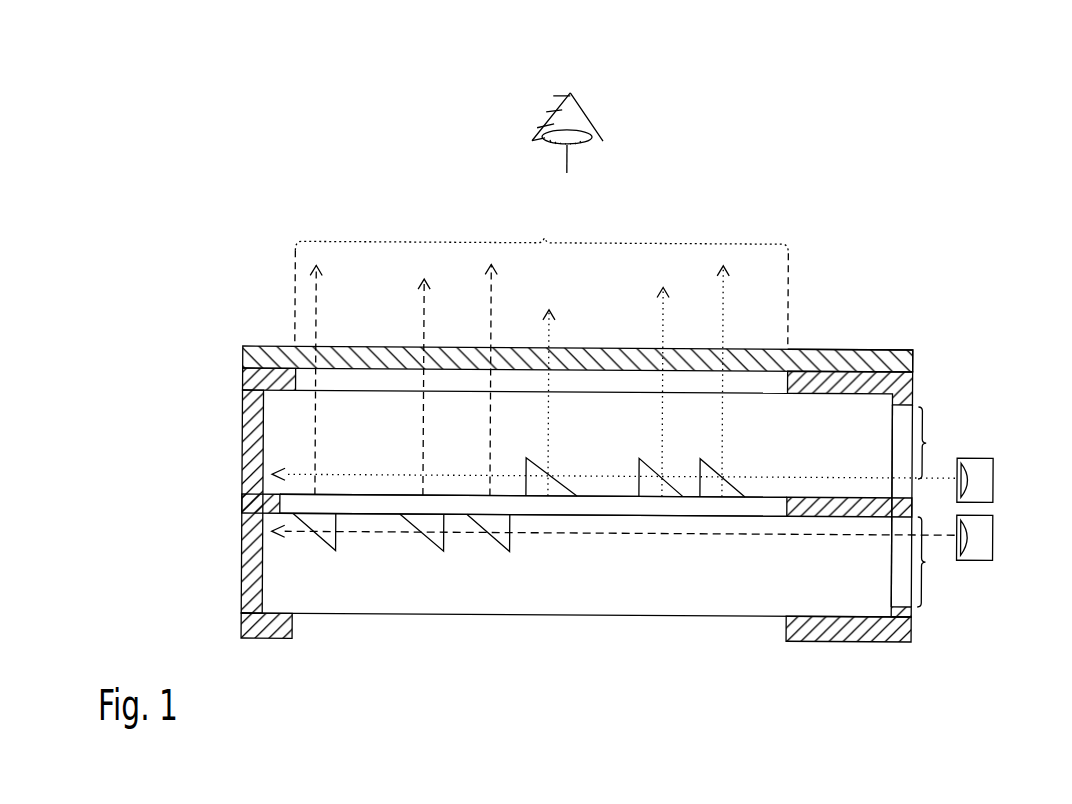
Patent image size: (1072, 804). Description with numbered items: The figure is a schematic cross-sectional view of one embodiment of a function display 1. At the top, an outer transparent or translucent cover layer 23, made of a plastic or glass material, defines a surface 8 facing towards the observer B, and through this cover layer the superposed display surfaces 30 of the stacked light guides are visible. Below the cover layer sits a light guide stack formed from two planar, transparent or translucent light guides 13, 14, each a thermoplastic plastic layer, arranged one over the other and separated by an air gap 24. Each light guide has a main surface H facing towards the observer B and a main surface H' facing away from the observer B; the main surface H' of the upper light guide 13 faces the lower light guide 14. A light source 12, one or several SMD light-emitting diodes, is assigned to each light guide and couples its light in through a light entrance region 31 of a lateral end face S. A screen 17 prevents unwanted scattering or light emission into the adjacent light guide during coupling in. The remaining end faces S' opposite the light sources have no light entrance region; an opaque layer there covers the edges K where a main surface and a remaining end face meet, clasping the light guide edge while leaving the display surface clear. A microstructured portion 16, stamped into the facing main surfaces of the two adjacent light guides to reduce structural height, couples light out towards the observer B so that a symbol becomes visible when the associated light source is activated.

The function display 1 is at (891, 245).
The surface 8 is at (687, 334).
The light source 12 is at (995, 481).
The light guide 13 is at (826, 418).
The light guide 14 is at (735, 603).
The microstructured portion 16 is at (734, 460).
The screen 17 is at (907, 386).
The cover layer 23 is at (886, 362).
The air gap 24 is at (755, 380).
The display surface 30 is at (541, 354).
The light entrance region 31 is at (928, 441).
The observer B is at (567, 133).
The main surface H is at (534, 409).
The main surface H' is at (533, 540).
The edge K is at (247, 381).
The end face S is at (921, 509).
The remaining end face S' is at (227, 501).